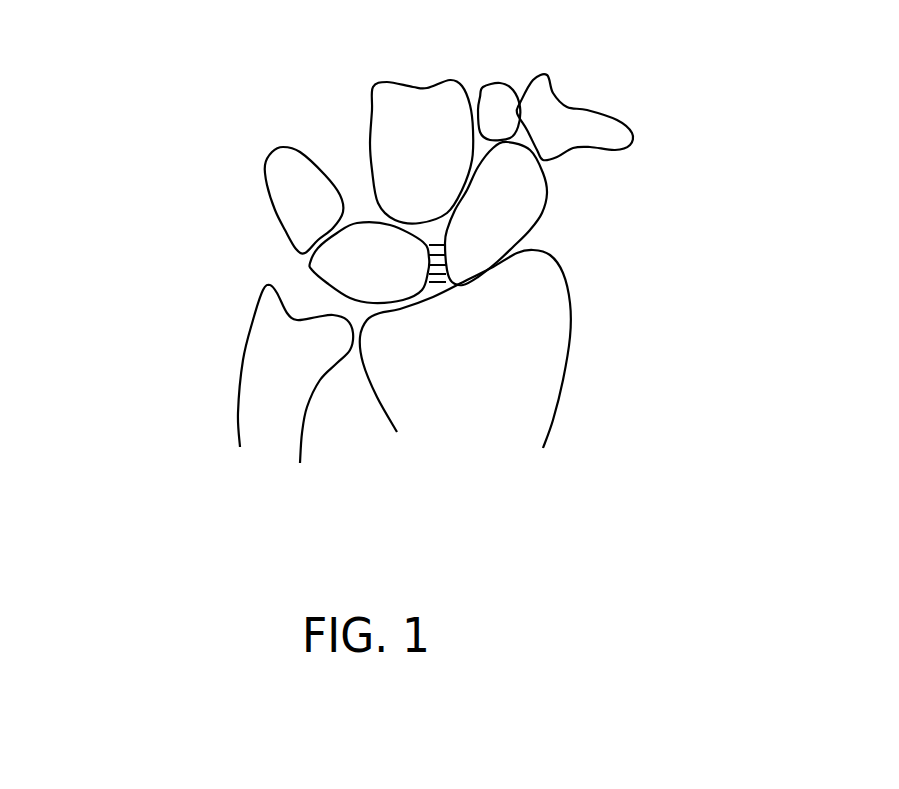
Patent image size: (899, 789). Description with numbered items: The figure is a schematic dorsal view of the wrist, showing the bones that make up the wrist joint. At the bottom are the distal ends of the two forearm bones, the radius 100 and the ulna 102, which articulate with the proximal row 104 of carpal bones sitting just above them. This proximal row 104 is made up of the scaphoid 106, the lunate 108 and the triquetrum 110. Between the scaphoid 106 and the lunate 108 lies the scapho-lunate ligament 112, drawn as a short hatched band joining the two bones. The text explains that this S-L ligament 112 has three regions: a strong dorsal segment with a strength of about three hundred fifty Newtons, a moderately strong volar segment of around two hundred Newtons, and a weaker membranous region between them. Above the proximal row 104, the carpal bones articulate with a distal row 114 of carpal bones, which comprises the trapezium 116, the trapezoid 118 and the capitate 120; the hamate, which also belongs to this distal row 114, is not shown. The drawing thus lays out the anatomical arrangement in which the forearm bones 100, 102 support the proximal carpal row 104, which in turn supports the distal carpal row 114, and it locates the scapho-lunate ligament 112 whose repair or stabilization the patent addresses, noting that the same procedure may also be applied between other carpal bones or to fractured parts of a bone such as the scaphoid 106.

The radius 100 is at (493, 367).
The ulna 102 is at (294, 365).
The proximal row of carpal bones 104 is at (202, 240).
The scaphoid 106 is at (515, 213).
The lunate 108 is at (378, 272).
The triquetrum 110 is at (303, 190).
The scapho-lunate ligament 112 is at (433, 253).
The distal row of carpal bones 114 is at (673, 122).
The trapezium 116 is at (568, 136).
The trapezoid 118 is at (497, 118).
The capitate 120 is at (424, 168).